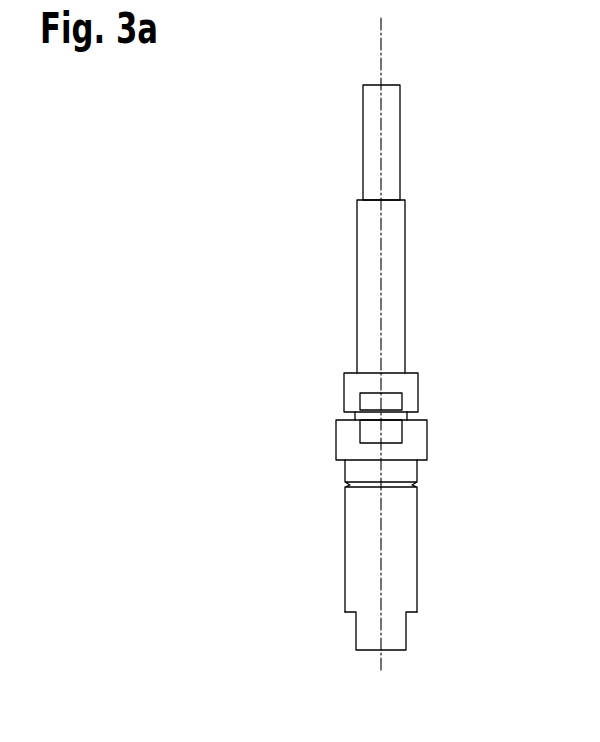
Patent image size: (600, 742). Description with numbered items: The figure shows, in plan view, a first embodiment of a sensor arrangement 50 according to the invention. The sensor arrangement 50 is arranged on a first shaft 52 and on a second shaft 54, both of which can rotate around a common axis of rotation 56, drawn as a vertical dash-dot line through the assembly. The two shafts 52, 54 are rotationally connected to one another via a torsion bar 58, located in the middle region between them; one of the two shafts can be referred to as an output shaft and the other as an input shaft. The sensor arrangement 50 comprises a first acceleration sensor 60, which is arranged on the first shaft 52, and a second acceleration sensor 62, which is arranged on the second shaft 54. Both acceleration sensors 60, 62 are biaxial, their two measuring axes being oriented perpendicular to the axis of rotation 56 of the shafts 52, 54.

The sensor arrangement 50 is at (277, 213).
The first shaft 52 is at (400, 128).
The second shaft 54 is at (400, 632).
The axis of rotation 56 is at (382, 47).
The torsion bar 58 is at (410, 412).
The first acceleration sensor 60 is at (366, 401).
The second acceleration sensor 62 is at (363, 433).